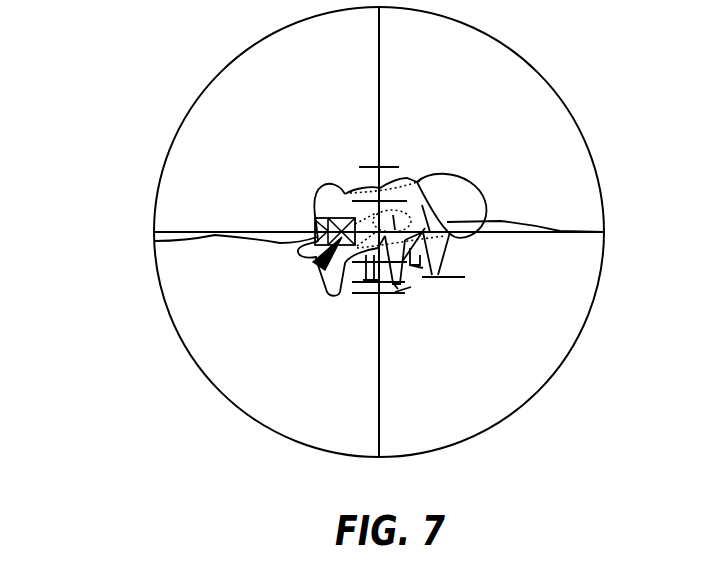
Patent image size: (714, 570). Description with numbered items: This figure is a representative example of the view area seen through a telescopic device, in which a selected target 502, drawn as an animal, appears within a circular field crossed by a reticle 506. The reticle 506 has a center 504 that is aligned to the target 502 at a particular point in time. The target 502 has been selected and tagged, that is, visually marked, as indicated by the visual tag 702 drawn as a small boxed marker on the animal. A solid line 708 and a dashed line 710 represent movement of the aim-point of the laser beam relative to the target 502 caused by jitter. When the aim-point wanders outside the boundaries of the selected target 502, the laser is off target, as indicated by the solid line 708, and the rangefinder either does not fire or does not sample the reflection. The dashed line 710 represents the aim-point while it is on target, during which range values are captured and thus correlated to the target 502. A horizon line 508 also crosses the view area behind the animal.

The selected target 502 is at (407, 178).
The center 504 is at (310, 170).
The reticle 506 is at (174, 232).
The horizon line 508 is at (497, 222).
The visual tag 702 is at (315, 230).
The solid line 708 is at (470, 180).
The dashed line 710 is at (318, 264).